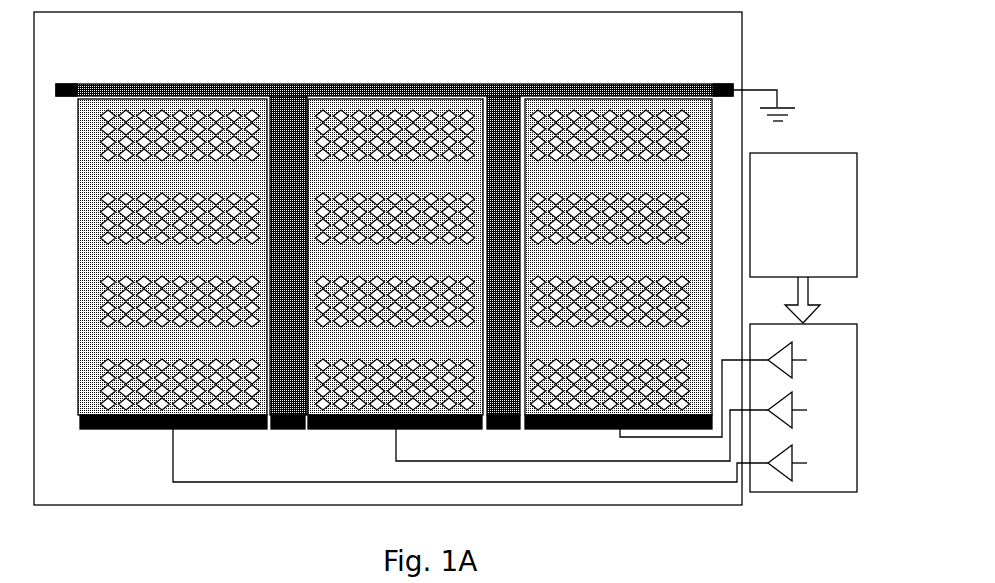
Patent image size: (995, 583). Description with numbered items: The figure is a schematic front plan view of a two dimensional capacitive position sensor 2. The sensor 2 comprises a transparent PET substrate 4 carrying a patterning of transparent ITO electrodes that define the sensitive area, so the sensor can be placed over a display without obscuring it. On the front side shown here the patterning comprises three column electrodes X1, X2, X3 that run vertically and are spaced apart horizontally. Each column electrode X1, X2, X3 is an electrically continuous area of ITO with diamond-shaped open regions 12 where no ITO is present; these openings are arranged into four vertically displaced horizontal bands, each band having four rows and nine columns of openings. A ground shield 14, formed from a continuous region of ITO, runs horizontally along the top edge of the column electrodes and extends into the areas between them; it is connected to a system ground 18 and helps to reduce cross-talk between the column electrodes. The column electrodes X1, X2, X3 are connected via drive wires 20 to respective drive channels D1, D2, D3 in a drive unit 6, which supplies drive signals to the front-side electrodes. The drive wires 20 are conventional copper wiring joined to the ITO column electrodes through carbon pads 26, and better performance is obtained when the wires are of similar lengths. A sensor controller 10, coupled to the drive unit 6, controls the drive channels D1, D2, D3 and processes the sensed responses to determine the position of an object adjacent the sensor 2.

The two dimensional capacitive position sensor 2 is at (290, 510).
The substrate 4 is at (60, 495).
The drive unit 6 is at (793, 493).
The sensor controller 10 is at (818, 226).
The light emitting elements 12 is at (108, 117).
The ground shield 14 is at (290, 97).
The system ground 18 is at (797, 105).
The drive wires 20 is at (688, 437).
The carbon pads 26 is at (127, 429).
The column electrode X1 is at (123, 180).
The column electrode X2 is at (333, 180).
The column electrode X3 is at (545, 178).
The drive channel D1 is at (803, 463).
The drive channel D2 is at (803, 410).
The drive channel D3 is at (803, 360).